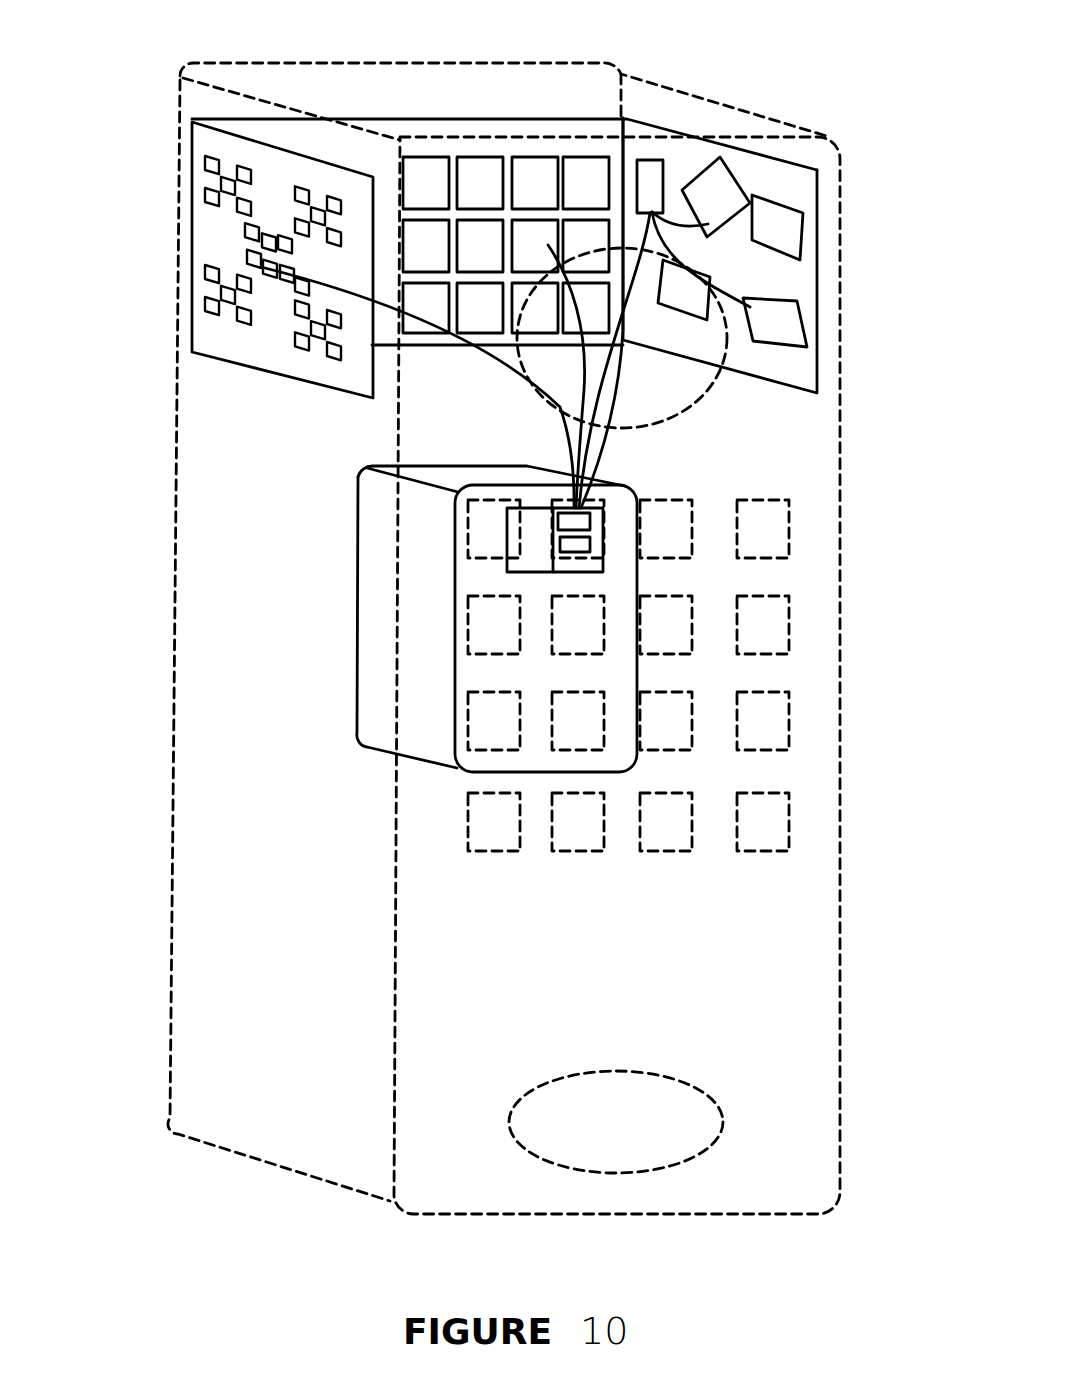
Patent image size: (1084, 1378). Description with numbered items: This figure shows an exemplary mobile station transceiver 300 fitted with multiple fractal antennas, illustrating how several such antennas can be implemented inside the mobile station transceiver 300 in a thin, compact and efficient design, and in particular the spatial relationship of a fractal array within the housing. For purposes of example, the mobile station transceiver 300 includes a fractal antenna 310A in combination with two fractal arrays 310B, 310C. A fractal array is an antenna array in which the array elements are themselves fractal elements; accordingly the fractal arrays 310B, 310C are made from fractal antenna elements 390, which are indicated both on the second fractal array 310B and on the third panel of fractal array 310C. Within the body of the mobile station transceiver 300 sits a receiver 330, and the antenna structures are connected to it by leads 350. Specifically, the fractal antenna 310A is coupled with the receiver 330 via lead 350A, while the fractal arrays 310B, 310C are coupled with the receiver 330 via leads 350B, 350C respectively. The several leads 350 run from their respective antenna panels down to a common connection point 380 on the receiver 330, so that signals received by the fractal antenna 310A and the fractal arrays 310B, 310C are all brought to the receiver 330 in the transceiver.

The mobile station transceiver 300 is at (173, 686).
The fractal antenna 310A is at (193, 233).
The fractal array 310B is at (488, 147).
The fractal array 310C is at (765, 285).
The receiver 330 is at (357, 638).
The lead 350 is at (623, 118).
The lead 350A is at (419, 388).
The lead 350B is at (578, 403).
The lead 350C is at (605, 377).
The connector 380 is at (573, 550).
The fractal antenna element 390 is at (658, 180).